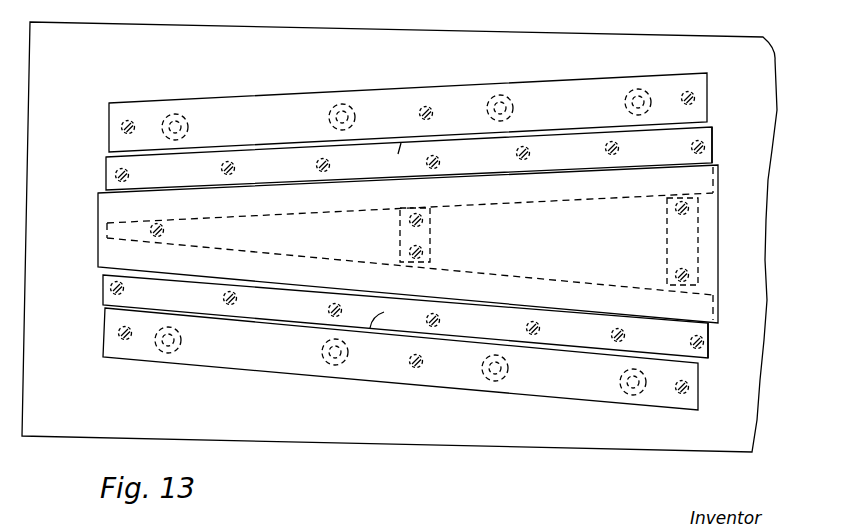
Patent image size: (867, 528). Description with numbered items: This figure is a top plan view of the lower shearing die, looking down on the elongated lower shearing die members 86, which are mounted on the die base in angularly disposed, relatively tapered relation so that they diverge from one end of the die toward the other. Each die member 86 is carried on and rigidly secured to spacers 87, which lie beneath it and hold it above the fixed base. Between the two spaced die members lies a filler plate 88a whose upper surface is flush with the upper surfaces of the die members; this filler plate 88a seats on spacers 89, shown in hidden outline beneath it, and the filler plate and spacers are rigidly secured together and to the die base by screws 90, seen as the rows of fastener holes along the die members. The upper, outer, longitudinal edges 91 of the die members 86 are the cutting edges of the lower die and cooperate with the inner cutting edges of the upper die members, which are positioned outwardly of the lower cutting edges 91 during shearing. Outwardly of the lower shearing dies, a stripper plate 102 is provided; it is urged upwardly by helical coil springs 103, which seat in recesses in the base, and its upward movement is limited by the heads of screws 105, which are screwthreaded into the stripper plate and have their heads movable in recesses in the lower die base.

The lower shearing die member 86 is at (282, 178).
The spacer 87 is at (712, 134).
The filler plate 88a is at (717, 172).
The spacer 89 is at (432, 236).
The screw 90 is at (221, 169).
The cutting edge 91 is at (385, 235).
The rear stripper plate 102 is at (354, 103).
The helical coil spring 103 is at (624, 93).
The screw 105 is at (431, 106).